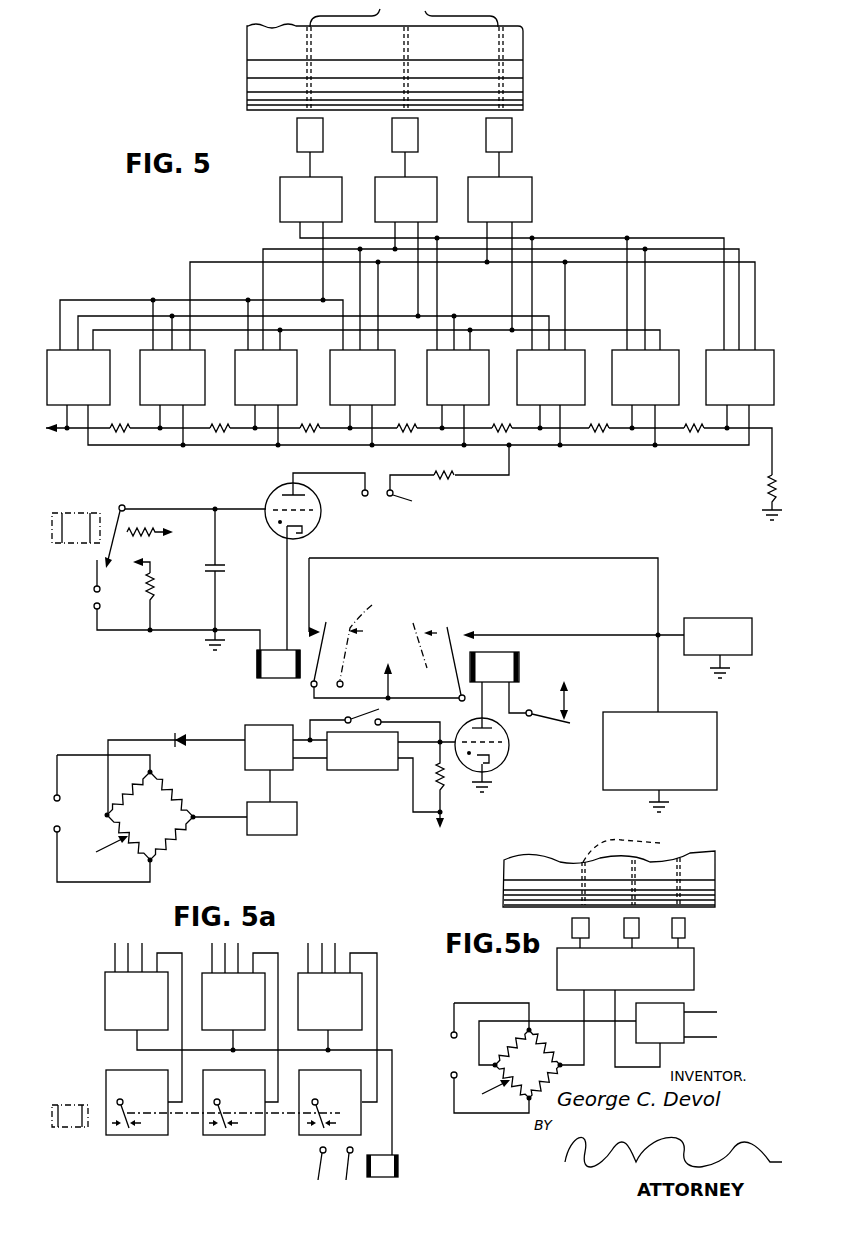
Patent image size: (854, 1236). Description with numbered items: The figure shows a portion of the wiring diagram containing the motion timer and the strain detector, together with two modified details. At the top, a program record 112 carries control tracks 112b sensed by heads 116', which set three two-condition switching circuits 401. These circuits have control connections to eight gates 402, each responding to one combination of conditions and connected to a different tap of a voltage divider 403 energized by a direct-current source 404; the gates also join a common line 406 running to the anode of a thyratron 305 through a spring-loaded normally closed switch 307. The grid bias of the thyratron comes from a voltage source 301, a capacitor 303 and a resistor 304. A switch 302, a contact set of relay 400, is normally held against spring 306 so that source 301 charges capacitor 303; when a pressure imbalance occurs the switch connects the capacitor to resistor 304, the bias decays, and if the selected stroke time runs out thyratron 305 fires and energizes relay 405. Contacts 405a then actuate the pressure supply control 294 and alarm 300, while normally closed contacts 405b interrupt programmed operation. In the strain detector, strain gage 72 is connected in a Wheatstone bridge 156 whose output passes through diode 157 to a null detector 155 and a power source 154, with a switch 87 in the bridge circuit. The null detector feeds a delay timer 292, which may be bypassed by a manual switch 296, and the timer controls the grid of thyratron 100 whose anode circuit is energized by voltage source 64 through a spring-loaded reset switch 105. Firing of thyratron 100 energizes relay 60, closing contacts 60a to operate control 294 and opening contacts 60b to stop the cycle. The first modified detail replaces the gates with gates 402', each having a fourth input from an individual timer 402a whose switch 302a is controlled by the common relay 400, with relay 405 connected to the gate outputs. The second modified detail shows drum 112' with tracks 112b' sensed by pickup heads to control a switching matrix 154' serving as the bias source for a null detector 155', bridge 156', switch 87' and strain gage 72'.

In FIG. 5, the program record drum 112 is at (413, 64).
In FIG. 5, the control tracks 112b is at (404, 13).
In FIG. 5, the sensing heads 116' is at (380, 147).
In FIG. 5, the two-condition switching circuits 401 is at (327, 212).
In FIG. 5, the gates 402 is at (402, 325).
In FIG. 5, the voltage divider 403 is at (696, 427).
In FIG. 5, the direct-current source 404 is at (50, 435).
In FIG. 5, the relay 405 is at (257, 661).
In FIG. 5A, the relay 405 is at (398, 1166).
In FIG. 5, the relay contacts 405a is at (312, 686).
In FIG. 5A, the relay contacts 405a is at (322, 1182).
In FIG. 5, the normally closed relay contacts 405b is at (370, 638).
In FIG. 5A, the normally closed relay contacts 405b is at (347, 1183).
In FIG. 5, the common line 406 is at (604, 446).
In FIG. 5, the spring-loaded normally closed switch 307 is at (412, 495).
In FIG. 5, the switch 302 is at (119, 505).
In FIG. 5, the thyratron tube 305 is at (271, 494).
In FIG. 5, the capacitor 303 is at (226, 568).
In FIG. 5, the spring 306 is at (153, 558).
In FIG. 5, the resistor 304 is at (157, 590).
In FIG. 5, the relay 400 is at (80, 545).
In FIG. 5A, the relay 400 is at (72, 1128).
In FIG. 5, the voltage source 301 is at (92, 598).
In FIG. 5, the relay 60 is at (520, 675).
In FIG. 5, the relay contacts 60a is at (453, 622).
In FIG. 5, the normally closed relay contacts 60b is at (425, 636).
In FIG. 5, the voltage source 64 is at (560, 676).
In FIG. 5, the spring-loaded reset switch 105 is at (572, 718).
In FIG. 5, the alarm 300 is at (724, 620).
In FIG. 5, the manual switch 296 is at (382, 712).
In FIG. 5, the diode 157 is at (181, 731).
In FIG. 5, the null detector 155 is at (262, 747).
In FIG. 5, the Wheatstone bridge 156 is at (152, 818).
In FIG. 5, the switch 87 is at (42, 813).
In FIG. 5, the strain gage 72 is at (100, 848).
In FIG. 5, the delay timer 292 is at (355, 771).
In FIG. 5, the power source 154 is at (272, 817).
In FIG. 5, the thyratron 100 is at (507, 759).
In FIG. 5, the pressure supply control 294 is at (701, 790).
In FIG. 5A, the gates 402' is at (216, 1049).
In FIG. 5A, the timer 402a is at (122, 1070).
In FIG. 5A, the switch 302a is at (126, 1130).
In FIG. 5B, the drum 112' is at (632, 879).
In FIG. 5B, the tracks 112b' is at (621, 847).
In FIG. 5B, the switching matrix 154' is at (649, 1005).
In FIG. 5B, the null detector 155' is at (607, 1025).
In FIG. 5B, the Wheatstone bridge 156' is at (508, 1058).
In FIG. 5B, the switch 87' is at (438, 1055).
In FIG. 5B, the strain gage 72' is at (484, 1093).